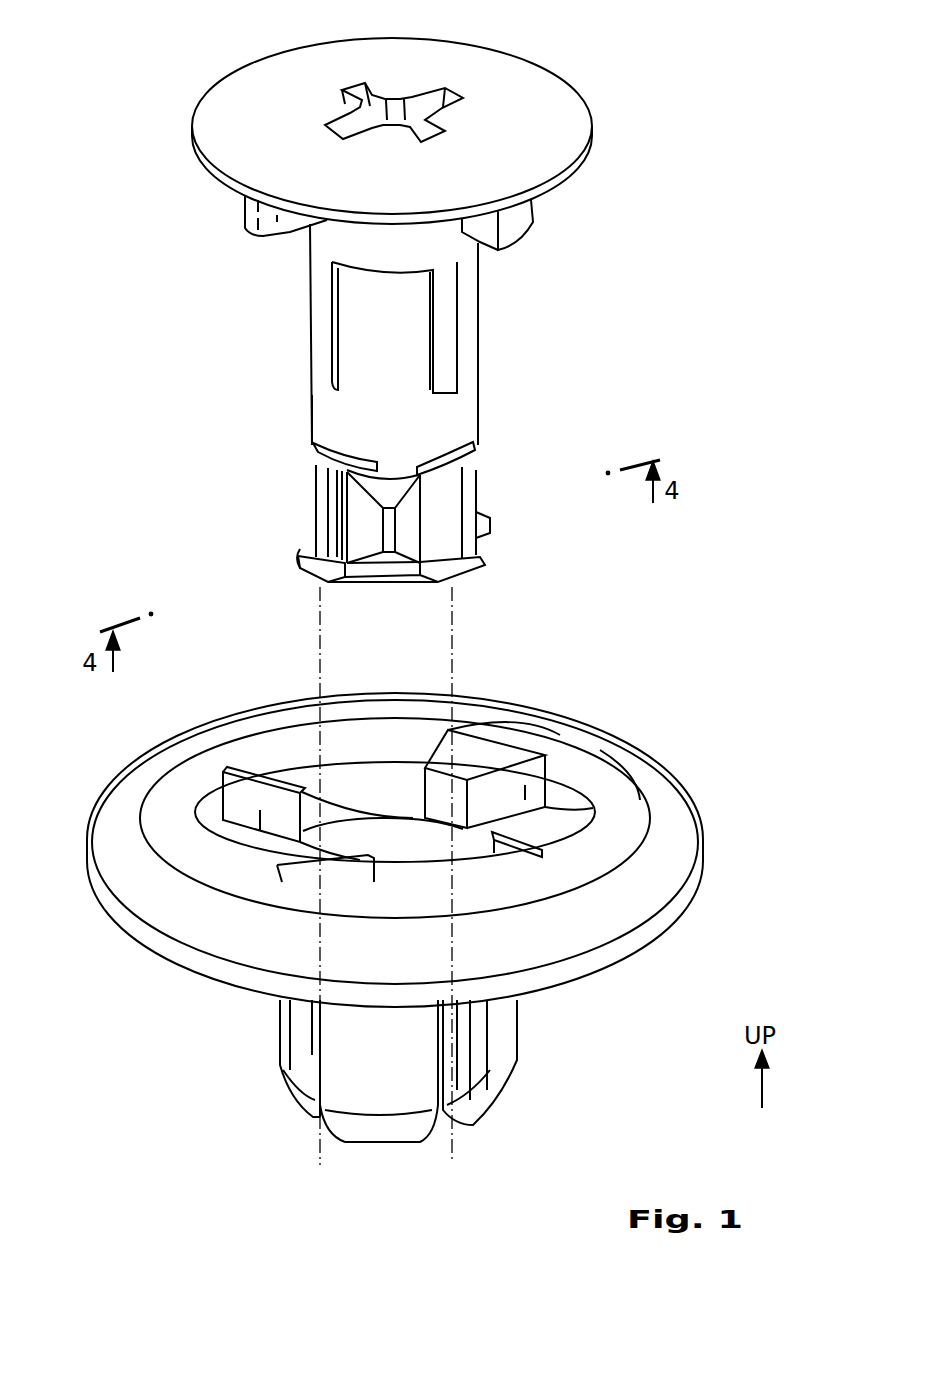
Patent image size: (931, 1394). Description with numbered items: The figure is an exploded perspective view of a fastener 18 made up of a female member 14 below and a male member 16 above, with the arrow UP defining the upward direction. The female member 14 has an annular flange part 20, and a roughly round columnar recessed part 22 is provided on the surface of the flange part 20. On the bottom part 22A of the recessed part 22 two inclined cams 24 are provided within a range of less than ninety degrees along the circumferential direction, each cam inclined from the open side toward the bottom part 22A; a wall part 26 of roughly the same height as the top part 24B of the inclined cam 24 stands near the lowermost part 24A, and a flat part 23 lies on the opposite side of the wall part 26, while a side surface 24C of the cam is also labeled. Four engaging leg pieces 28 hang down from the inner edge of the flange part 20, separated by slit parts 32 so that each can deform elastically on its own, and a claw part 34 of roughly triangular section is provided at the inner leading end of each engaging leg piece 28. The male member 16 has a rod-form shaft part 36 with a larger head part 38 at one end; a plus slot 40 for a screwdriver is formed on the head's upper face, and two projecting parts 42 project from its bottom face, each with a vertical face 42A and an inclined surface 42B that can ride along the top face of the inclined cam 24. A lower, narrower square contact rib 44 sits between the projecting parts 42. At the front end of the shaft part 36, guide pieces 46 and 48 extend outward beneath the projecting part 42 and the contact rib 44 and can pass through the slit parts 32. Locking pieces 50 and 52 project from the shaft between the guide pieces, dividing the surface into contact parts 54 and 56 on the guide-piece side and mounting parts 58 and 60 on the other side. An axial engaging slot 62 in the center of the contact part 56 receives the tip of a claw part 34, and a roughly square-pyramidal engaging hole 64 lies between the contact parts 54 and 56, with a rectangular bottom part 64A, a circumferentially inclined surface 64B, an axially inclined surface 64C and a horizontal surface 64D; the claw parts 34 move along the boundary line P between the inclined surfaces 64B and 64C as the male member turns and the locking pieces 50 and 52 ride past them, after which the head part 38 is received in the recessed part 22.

The female member 14 is at (640, 740).
The male member 16 is at (655, 192).
The fastener 18 is at (771, 899).
The flange part 20 is at (676, 823).
The recessed part 22 is at (527, 730).
The bottom part 22A is at (627, 782).
The flat part 23 is at (550, 833).
The inclined cam 24 is at (297, 770).
The lowermost part 24A is at (400, 780).
The top part 24B is at (247, 765).
The projection front surface 24C is at (247, 800).
The wall part 26 is at (493, 748).
The engaging leg piece 28 is at (350, 1063).
The slit part 32 is at (318, 1080).
The claw part 34 is at (473, 1127).
The shaft part 36 is at (493, 382).
The head part 38 is at (555, 82).
The plus slot 40 is at (418, 100).
The projecting part 42 is at (517, 228).
The vertical face 42A is at (486, 236).
The inclined surface 42B is at (540, 213).
The contact rib 44 is at (290, 235).
The guide piece 46 is at (470, 570).
The guide piece 48 is at (485, 512).
The locking piece 50 is at (478, 446).
The locking piece 52 is at (315, 438).
The contact part 54 is at (455, 483).
The contact part 56 is at (322, 487).
The mounting part 58 is at (445, 412).
The mounting part 60 is at (325, 402).
The engaging slot 62 is at (333, 514).
The engaging hole 64 is at (406, 520).
The bottom part 64A is at (340, 565).
The inclined surface 64B is at (363, 548).
The inclined surface 64C is at (388, 490).
The horizontal surface 64D is at (403, 568).
The boundary line P is at (418, 496).